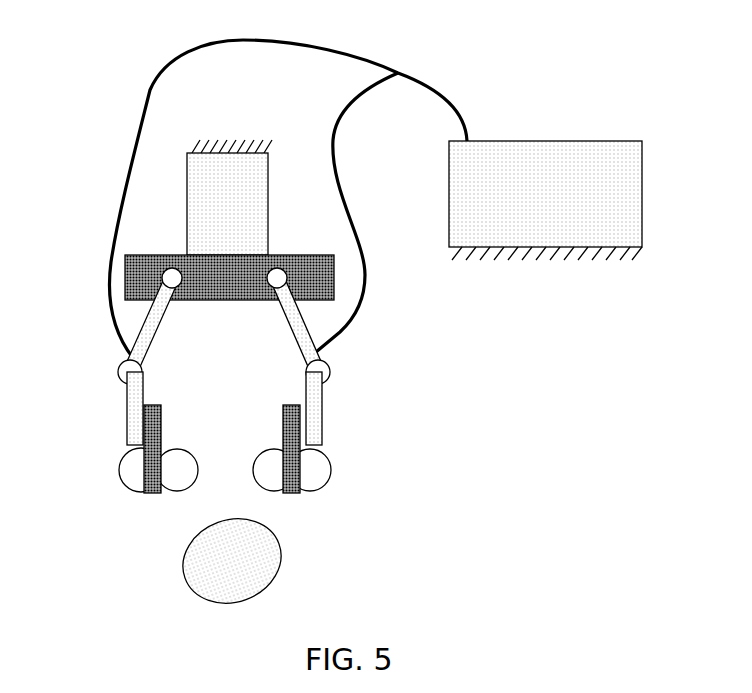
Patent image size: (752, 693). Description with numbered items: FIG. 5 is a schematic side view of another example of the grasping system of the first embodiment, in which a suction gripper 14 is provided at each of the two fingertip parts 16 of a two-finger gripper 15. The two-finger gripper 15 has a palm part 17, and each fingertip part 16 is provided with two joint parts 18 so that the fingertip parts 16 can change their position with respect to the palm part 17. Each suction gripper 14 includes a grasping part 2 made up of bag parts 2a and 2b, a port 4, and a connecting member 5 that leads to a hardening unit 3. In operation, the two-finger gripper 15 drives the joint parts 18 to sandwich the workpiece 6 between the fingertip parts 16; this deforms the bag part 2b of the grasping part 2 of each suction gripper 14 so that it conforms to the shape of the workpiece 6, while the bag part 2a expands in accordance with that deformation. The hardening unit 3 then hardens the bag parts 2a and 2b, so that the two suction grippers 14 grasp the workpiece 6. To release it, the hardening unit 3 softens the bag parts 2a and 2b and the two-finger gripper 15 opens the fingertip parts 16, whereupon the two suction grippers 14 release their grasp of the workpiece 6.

The grasping part 2 is at (100, 477).
The bag part 2a is at (125, 492).
The bag part 2b is at (188, 450).
The hardening unit 3 is at (588, 141).
The port 4 is at (153, 400).
The connecting member 5 is at (445, 92).
The workpiece 6 is at (283, 567).
The suction gripper 14 is at (112, 440).
The two-finger gripper 15 is at (146, 244).
The fingertip part 16 is at (126, 403).
The palm part 17 is at (320, 254).
The joint part 18 is at (162, 278).